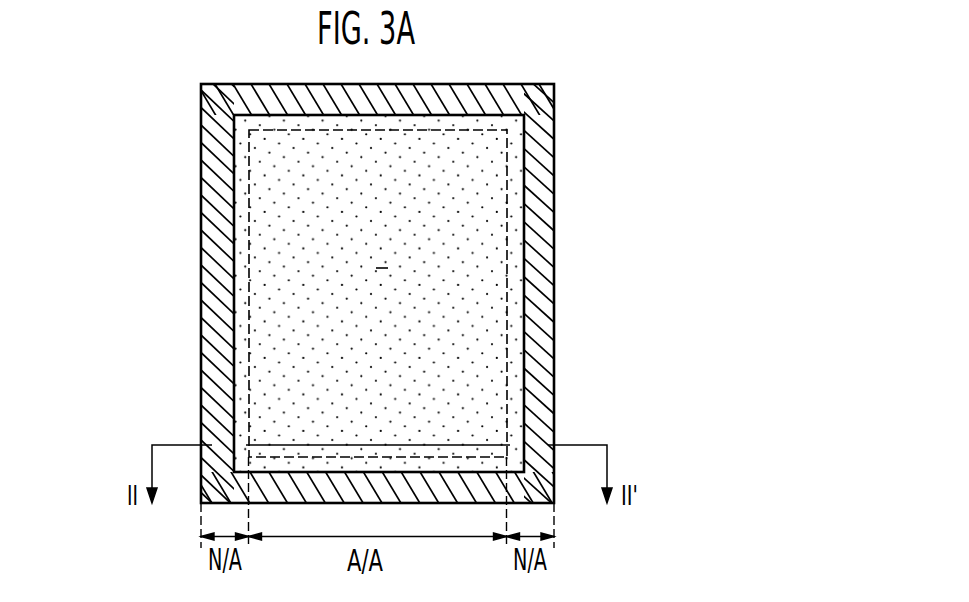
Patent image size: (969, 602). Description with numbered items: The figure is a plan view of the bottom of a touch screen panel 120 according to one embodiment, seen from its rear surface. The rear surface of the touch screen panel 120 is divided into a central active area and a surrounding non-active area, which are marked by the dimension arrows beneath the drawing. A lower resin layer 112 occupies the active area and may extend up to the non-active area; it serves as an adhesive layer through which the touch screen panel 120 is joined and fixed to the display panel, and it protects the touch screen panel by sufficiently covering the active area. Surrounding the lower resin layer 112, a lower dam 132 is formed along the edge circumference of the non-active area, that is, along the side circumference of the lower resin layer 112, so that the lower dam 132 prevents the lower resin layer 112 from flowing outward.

The lower resin layer 112 is at (497, 148).
The lower dam 132 is at (540, 238).
The touch screen panel 120 is at (555, 337).